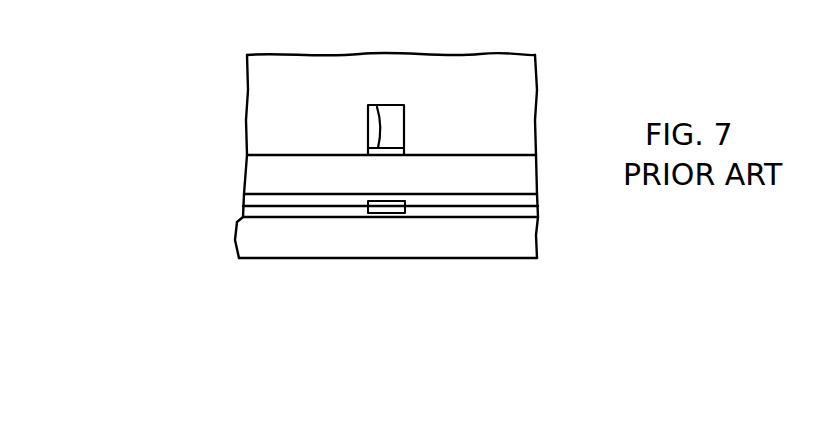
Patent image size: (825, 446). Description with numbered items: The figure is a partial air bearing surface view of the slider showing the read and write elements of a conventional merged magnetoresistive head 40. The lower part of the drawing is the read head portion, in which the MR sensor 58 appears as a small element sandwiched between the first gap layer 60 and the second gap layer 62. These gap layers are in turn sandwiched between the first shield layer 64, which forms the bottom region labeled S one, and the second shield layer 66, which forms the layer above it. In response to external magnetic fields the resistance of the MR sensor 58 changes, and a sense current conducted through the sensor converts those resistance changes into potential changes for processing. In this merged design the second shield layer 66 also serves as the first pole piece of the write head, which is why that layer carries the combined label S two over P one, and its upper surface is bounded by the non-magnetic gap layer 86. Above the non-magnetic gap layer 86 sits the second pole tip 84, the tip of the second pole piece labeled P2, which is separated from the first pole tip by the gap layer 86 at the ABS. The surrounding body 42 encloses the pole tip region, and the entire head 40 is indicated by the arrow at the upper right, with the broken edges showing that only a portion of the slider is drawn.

The merged magnetoresistive head 40 is at (400, 158).
The upper layer 42 is at (359, 80).
The second pole tip 84 is at (393, 113).
The non-magnetic gap layer 86 is at (377, 106).
The P2 layer P2 is at (392, 127).
The second shield layer 66 is at (332, 176).
The first shield layer 64 is at (429, 256).
The MR sensor 58 is at (388, 213).
The first gap layer 60 is at (272, 218).
The second gap layer 62 is at (497, 202).